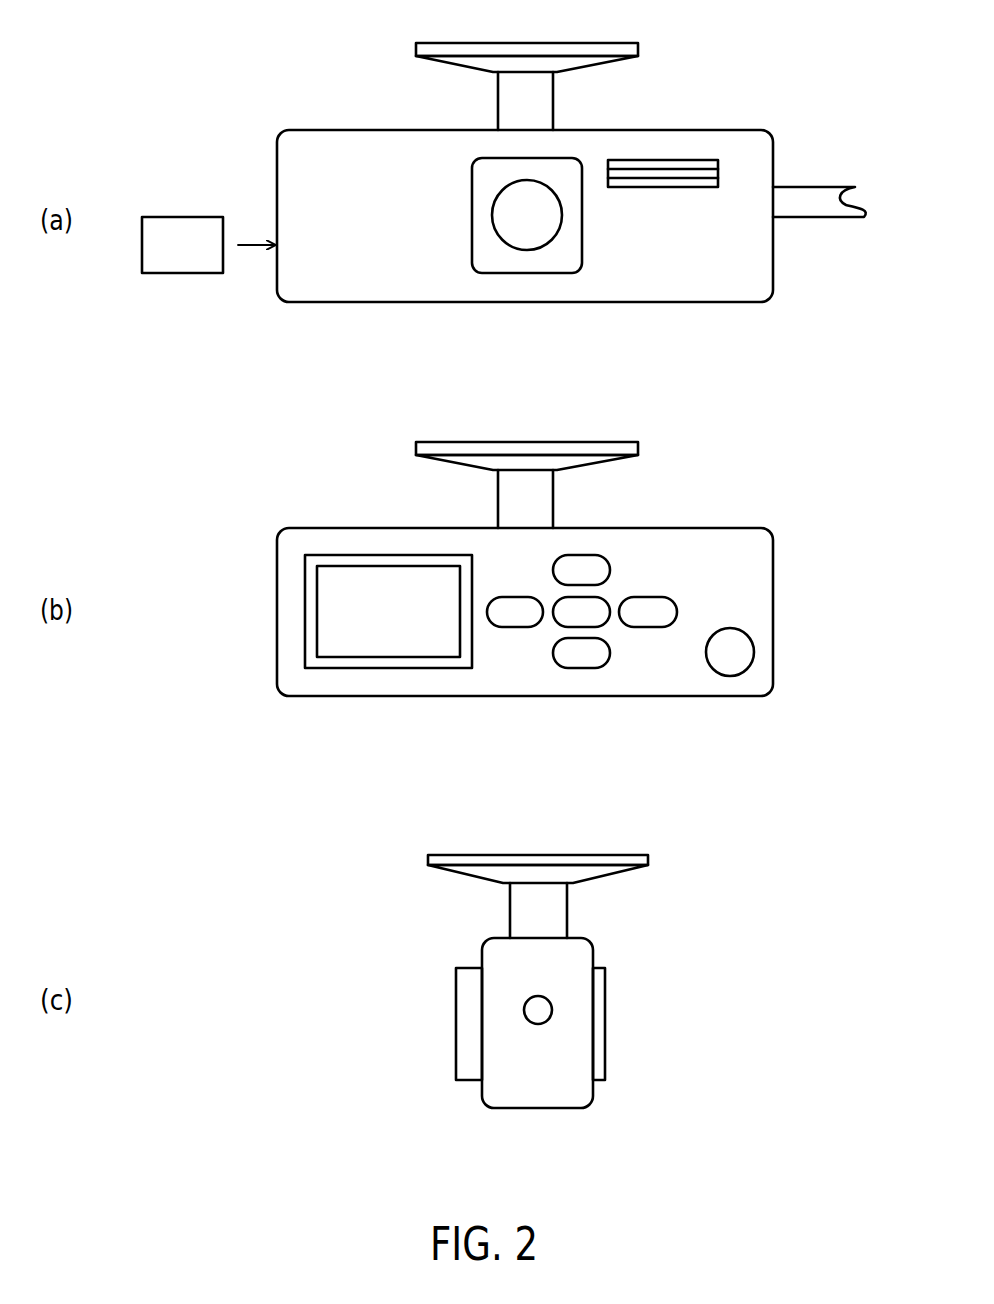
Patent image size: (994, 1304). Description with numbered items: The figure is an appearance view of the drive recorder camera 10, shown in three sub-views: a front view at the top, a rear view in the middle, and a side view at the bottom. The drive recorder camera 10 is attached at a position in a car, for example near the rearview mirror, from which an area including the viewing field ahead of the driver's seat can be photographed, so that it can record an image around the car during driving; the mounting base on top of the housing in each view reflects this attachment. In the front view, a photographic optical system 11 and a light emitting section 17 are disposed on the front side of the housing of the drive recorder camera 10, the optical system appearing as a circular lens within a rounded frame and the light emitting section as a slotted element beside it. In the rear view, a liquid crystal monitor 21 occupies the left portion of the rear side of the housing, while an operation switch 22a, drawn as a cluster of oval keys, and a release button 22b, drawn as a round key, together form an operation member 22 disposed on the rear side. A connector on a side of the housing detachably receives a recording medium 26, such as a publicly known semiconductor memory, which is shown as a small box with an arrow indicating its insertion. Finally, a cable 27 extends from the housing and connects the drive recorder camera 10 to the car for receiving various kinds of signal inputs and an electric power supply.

The drive recorder camera 10 is at (334, 124).
The photographic optical system 11 is at (517, 250).
The light emitting section 17 is at (698, 160).
The liquid crystal monitor 21 is at (360, 669).
The operation member 22 is at (668, 661).
The operation switch 22a is at (580, 669).
The release button 22b is at (731, 677).
The recording medium 26 is at (188, 276).
The cable 27 is at (817, 187).